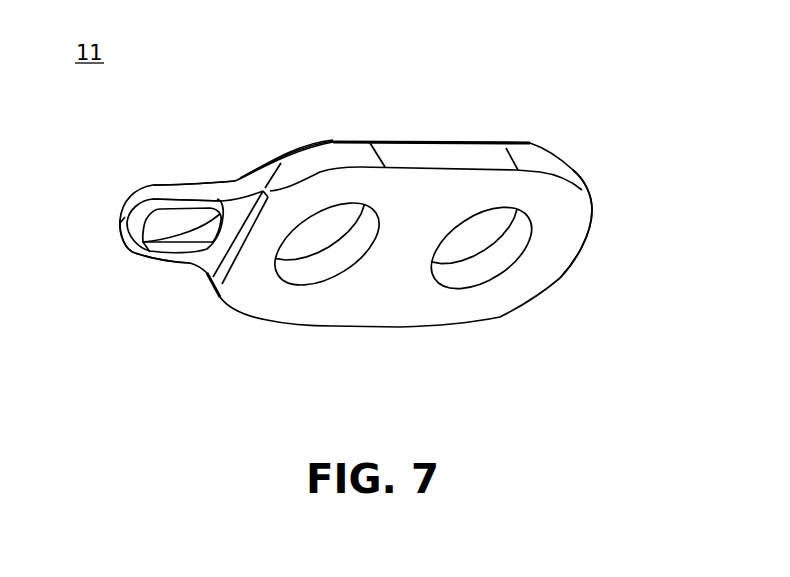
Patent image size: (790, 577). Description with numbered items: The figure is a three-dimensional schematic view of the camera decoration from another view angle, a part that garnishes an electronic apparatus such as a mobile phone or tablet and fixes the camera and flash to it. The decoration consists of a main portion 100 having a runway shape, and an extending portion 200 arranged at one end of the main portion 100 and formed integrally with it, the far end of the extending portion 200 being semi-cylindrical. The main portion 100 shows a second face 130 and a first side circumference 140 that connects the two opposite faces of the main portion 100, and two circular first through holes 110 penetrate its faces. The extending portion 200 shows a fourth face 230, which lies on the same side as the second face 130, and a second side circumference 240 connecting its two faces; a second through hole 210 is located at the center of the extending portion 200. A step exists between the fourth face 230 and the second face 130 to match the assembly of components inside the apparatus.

The main portion 100 is at (393, 181).
The first through hole 110 is at (463, 243).
The second face 130 is at (563, 220).
The first side circumference 140 is at (485, 157).
The extending portion 200 is at (220, 202).
The second through hole 210 is at (172, 225).
The fourth face 230 is at (137, 254).
The second side circumference 240 is at (167, 192).